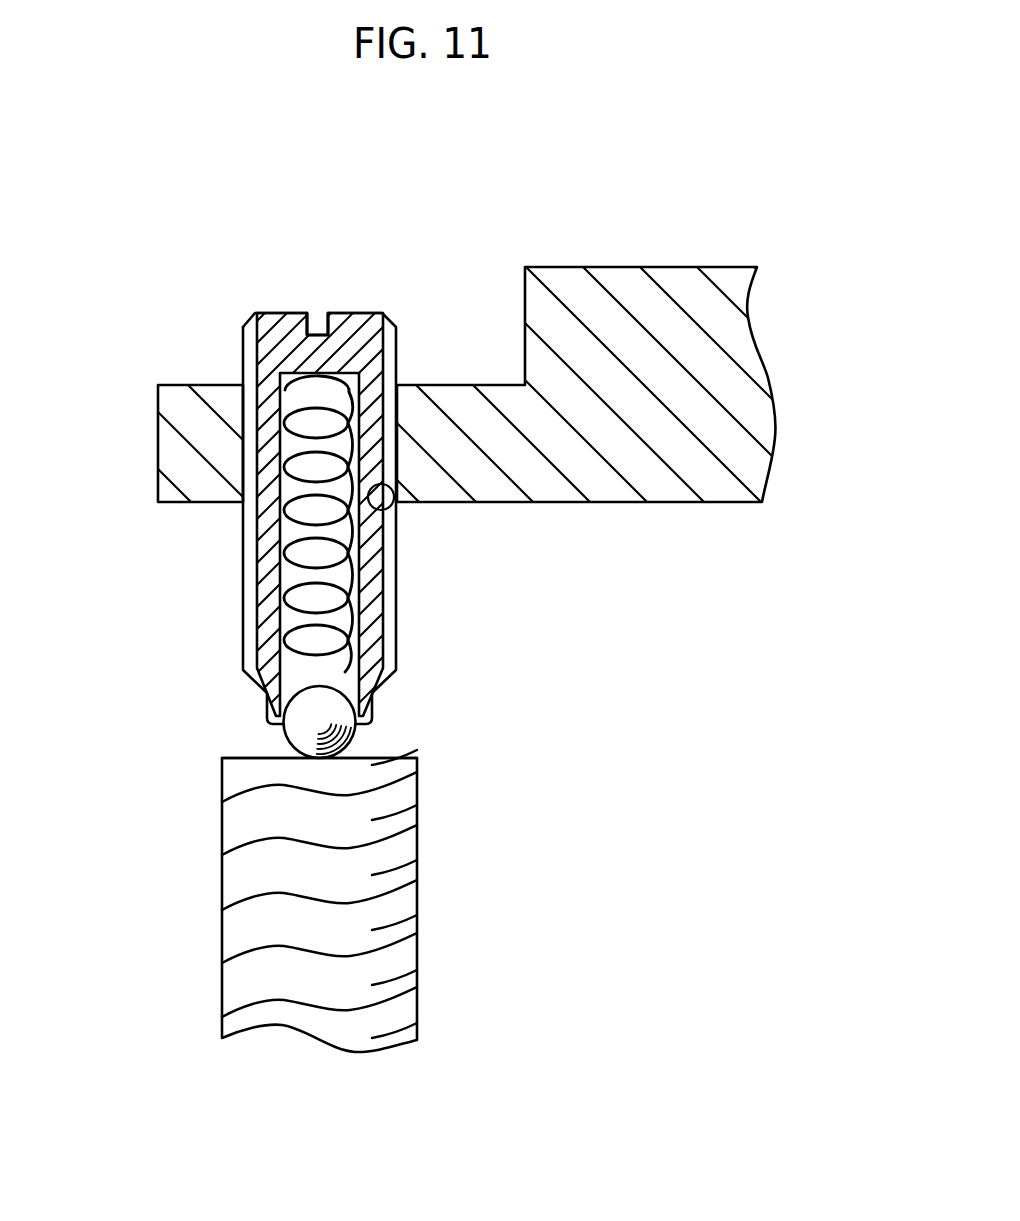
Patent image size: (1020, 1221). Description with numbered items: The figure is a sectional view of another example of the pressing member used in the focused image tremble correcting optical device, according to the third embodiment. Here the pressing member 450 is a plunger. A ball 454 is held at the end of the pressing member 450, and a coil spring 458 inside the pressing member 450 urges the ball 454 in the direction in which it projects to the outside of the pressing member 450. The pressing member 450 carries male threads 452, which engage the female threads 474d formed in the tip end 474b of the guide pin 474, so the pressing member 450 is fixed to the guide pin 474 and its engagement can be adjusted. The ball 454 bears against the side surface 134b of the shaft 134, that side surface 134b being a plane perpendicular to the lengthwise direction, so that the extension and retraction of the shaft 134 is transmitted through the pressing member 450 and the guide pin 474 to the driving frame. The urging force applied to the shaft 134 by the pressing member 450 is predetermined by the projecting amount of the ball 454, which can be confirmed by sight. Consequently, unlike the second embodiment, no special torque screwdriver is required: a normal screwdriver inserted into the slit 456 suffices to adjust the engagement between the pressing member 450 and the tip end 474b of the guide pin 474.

The shaft 134 is at (399, 930).
The side surface 134b is at (257, 757).
The pressing member 450 is at (278, 302).
The male threads 452 is at (392, 623).
The ball 454 is at (368, 743).
The slit 456 is at (318, 334).
The coil spring 458 is at (322, 586).
The guide pin 474 is at (769, 378).
The tip end of the guide pin 474b is at (173, 442).
The female threads 474d is at (396, 517).